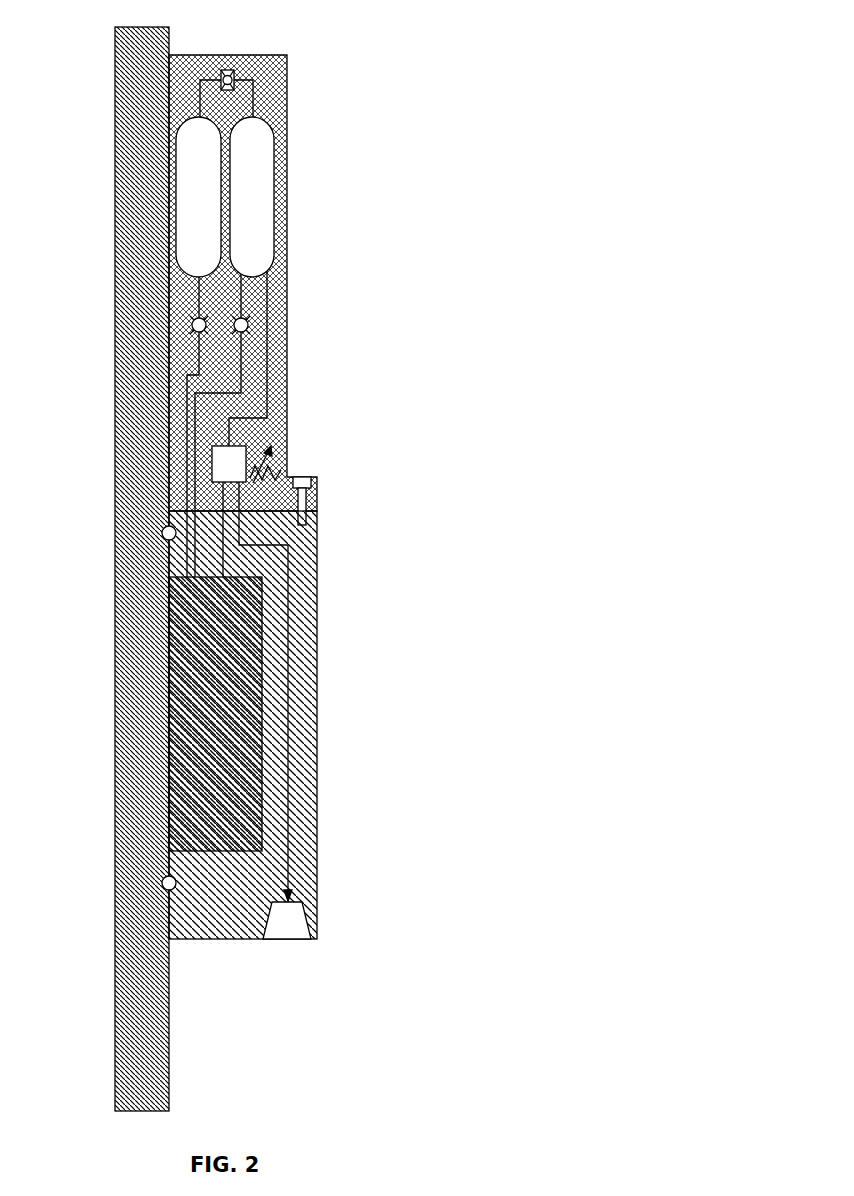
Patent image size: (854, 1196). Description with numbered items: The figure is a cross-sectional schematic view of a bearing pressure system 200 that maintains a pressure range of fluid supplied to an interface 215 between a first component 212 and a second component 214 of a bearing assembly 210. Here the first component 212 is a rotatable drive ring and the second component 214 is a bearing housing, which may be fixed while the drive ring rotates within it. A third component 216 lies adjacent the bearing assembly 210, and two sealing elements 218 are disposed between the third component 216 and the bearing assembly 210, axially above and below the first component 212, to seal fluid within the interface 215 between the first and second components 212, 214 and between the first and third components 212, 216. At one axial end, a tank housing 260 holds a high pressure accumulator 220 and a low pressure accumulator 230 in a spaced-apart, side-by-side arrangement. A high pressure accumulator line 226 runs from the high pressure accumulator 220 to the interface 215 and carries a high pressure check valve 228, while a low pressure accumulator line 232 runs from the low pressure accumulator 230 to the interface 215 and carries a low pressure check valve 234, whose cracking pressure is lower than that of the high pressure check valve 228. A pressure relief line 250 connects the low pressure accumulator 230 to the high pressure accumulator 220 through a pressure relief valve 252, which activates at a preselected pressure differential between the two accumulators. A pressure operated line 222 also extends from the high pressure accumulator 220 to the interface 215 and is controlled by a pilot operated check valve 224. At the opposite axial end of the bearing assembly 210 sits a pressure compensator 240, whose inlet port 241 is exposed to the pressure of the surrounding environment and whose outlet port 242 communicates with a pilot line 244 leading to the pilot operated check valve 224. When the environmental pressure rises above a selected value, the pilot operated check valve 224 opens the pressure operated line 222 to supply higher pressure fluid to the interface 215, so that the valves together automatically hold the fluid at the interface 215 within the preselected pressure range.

The bearing pressure system 200 is at (436, 46).
The bearing assembly 210 is at (337, 620).
The first component 212 is at (221, 672).
The second component 214 is at (236, 902).
The interface 215 is at (266, 742).
The third component 216 is at (157, 705).
The sealing elements 218 is at (165, 527).
The high pressure accumulator 220 is at (270, 226).
The pressure operated line 222 is at (268, 378).
The pilot operated check valve 224 is at (240, 453).
The high pressure accumulator line 226 is at (194, 460).
The high pressure check valve 228 is at (248, 320).
The low pressure accumulator 230 is at (216, 226).
The low pressure accumulator line 232 is at (187, 396).
The low pressure check valve 234 is at (194, 318).
The pressure compensator 240 is at (272, 940).
The inlet port 241 is at (290, 944).
The outlet port 242 is at (289, 892).
The pilot line 244 is at (290, 830).
The pressure relief line 250 is at (254, 100).
The pressure relief valve 252 is at (233, 76).
The tank housing 260 is at (287, 189).